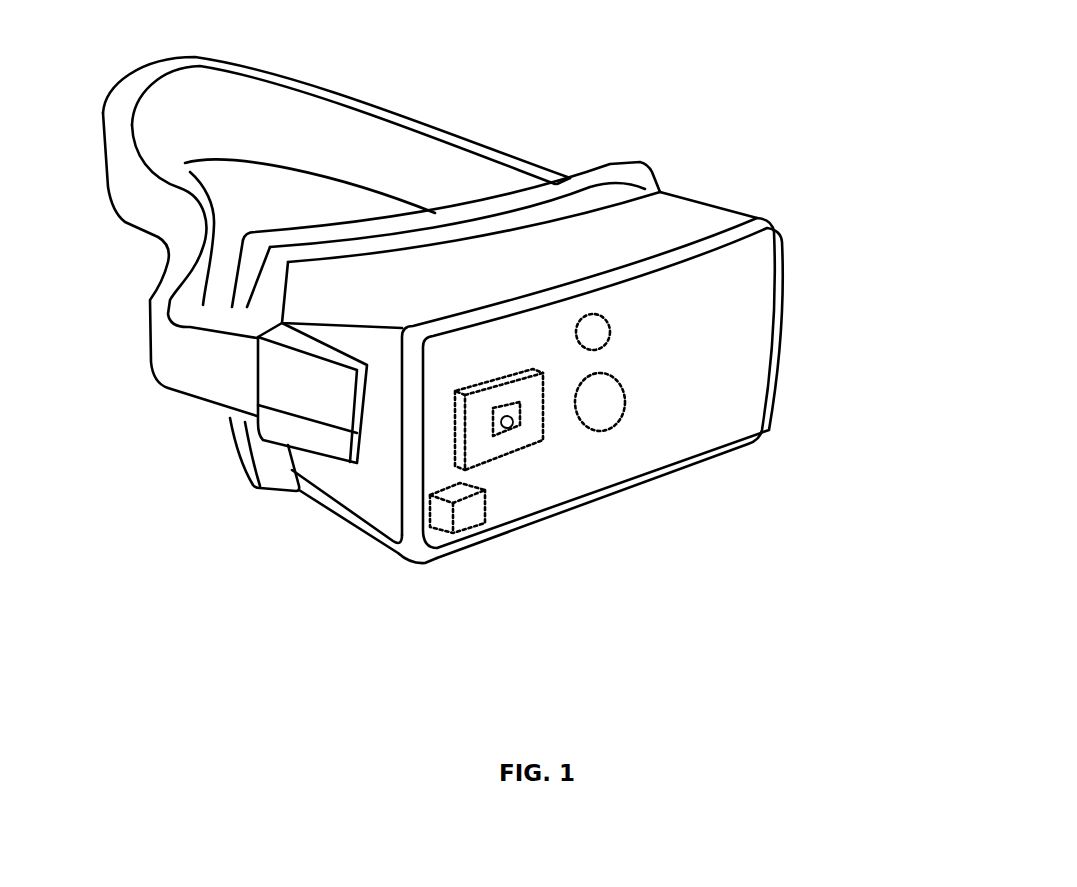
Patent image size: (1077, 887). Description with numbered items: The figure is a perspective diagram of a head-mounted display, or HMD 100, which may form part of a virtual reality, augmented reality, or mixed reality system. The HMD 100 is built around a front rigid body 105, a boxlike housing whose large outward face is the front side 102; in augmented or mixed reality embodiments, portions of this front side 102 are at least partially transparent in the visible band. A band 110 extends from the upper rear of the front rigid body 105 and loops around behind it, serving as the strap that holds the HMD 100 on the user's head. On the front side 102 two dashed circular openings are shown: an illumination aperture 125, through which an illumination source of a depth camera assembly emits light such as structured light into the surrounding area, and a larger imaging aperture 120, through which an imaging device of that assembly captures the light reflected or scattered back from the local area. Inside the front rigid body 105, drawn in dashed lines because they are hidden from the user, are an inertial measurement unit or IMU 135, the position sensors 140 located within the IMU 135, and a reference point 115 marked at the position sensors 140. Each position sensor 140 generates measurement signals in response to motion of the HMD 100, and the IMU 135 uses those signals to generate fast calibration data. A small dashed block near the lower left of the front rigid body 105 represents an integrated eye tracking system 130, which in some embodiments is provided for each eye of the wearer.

The head-mounted display (HMD) 100 is at (858, 41).
The front side 102 is at (695, 378).
The front rigid body 105 is at (644, 430).
The band 110 is at (448, 124).
The reference point 115 is at (507, 428).
The imaging aperture 120 is at (625, 403).
The illumination aperture 125 is at (610, 322).
The eye tracking system 130 is at (467, 513).
The inertial measurement unit (IMU) 135 is at (615, 534).
The position sensor 140 is at (495, 438).